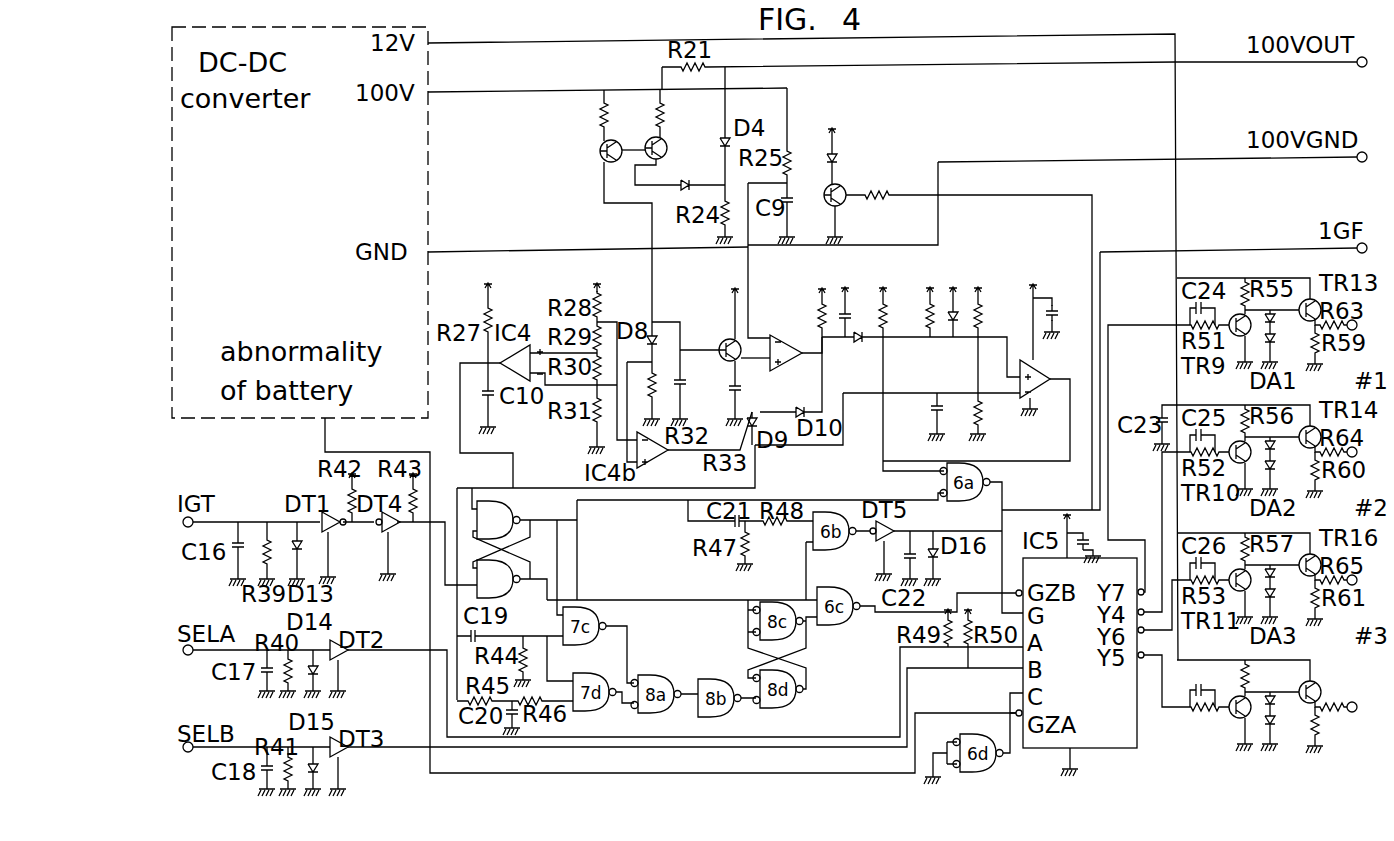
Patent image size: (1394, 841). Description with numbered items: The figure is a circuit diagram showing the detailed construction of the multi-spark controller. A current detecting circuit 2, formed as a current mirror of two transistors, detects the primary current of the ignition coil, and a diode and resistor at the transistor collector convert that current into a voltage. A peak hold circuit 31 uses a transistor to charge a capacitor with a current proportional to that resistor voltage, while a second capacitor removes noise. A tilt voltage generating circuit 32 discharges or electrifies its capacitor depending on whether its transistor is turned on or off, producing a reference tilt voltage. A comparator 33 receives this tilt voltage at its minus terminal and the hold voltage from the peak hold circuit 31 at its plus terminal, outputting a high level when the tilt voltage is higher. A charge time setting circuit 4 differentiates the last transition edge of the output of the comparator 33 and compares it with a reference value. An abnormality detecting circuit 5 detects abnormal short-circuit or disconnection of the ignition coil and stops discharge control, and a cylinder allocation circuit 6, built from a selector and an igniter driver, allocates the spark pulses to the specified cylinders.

The current detecting circuit 2 is at (534, 143).
The peak hold circuit 31 is at (709, 298).
The tilt voltage generating circuit 32 is at (857, 130).
The comparator 33 is at (804, 294).
The charge time setting circuit 4 is at (973, 283).
The abnormality detecting circuit 5 is at (476, 475).
The cylinder allocation circuit 6 is at (1161, 698).